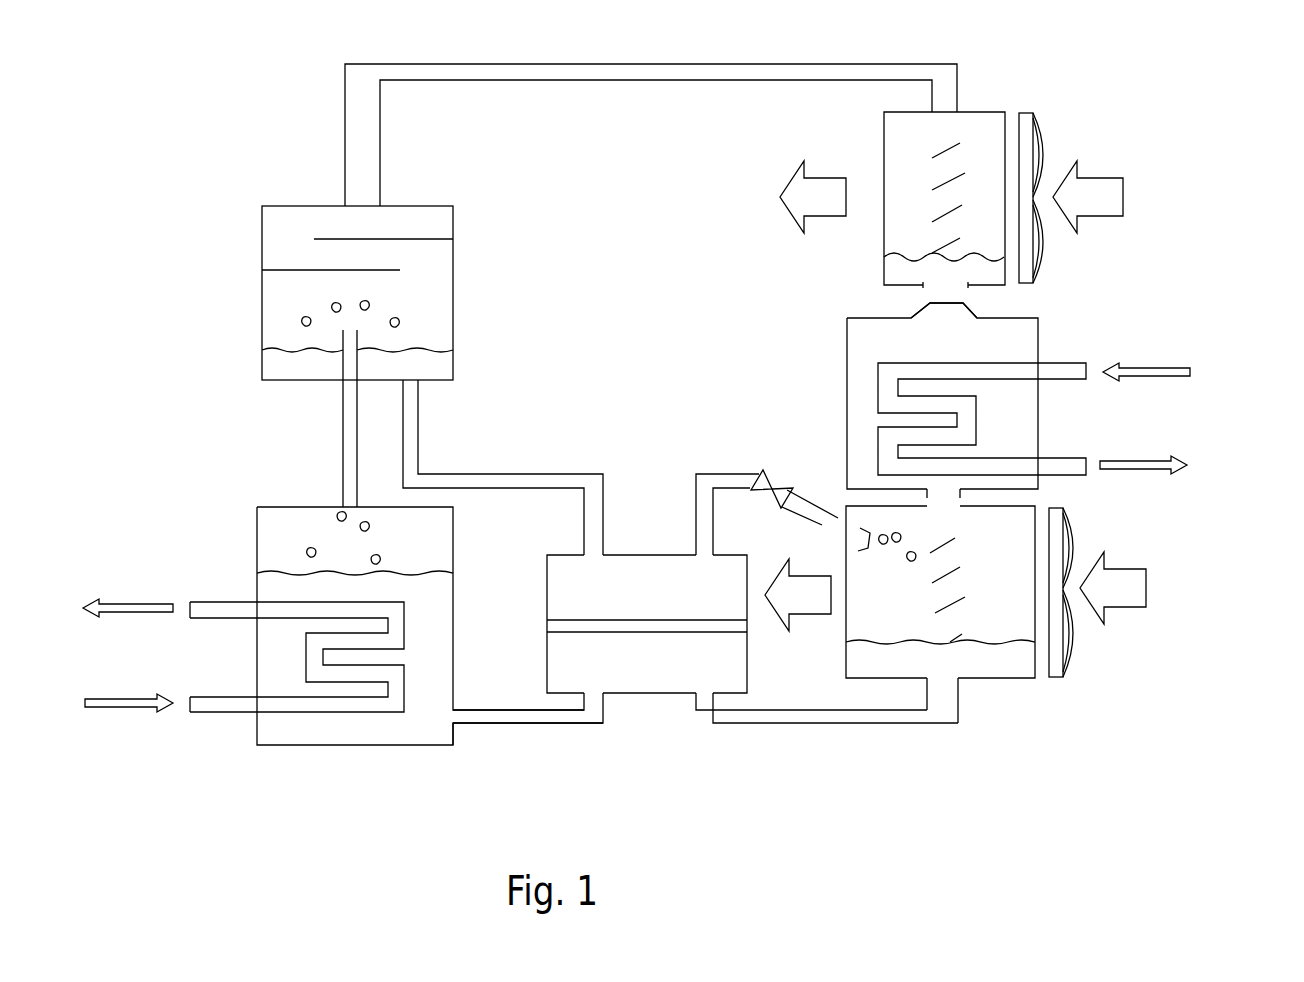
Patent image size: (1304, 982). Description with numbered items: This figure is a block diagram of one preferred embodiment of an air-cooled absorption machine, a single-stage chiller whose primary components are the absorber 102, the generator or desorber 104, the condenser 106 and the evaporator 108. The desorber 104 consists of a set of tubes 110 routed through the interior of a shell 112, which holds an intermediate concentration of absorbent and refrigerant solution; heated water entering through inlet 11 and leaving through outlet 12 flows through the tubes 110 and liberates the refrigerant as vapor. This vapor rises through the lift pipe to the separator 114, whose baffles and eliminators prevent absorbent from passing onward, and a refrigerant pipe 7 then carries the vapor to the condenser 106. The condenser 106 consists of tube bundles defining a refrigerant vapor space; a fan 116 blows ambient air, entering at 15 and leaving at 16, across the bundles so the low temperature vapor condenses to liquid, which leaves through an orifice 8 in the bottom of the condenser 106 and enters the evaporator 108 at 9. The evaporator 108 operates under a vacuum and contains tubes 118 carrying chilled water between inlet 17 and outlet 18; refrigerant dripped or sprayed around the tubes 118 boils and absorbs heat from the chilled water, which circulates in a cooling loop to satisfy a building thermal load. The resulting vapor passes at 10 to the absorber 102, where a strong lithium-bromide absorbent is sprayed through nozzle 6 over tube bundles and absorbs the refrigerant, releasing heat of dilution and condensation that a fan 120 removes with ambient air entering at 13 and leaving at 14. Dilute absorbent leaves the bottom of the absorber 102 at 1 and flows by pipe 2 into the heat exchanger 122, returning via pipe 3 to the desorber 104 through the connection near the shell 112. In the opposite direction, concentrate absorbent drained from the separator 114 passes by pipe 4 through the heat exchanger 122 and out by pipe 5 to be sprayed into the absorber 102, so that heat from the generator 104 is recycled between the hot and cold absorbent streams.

The absorber solution outlet line 1 is at (956, 701).
The heat exchanger inlet line from absorber 2 is at (821, 727).
The heat exchanger outlet line to generator 3 is at (532, 736).
The separator outlet line to heat exchanger 4 is at (503, 467).
The heat exchanger outlet line to absorber 5 is at (709, 514).
The spray valve nozzle 6 is at (833, 515).
The refrigerant vapor line 7 is at (651, 118).
The condenser outlet 8 is at (945, 281).
The evaporator inlet 9 is at (944, 325).
The evaporator outlet to absorber 10 is at (943, 507).
The heated water inlet 11 is at (157, 727).
The heated water outlet 12 is at (156, 594).
The absorber cooling air inlet 13 is at (1113, 586).
The absorber cooling air outlet 14 is at (798, 591).
The condenser cooling air inlet 15 is at (1111, 197).
The condenser cooling air outlet 16 is at (794, 197).
The chilled water inlet 17 is at (1141, 360).
The chilled water outlet 18 is at (1135, 480).
The absorber 102 is at (1030, 678).
The generator or desorber 104 is at (263, 517).
The condenser 106 is at (975, 113).
The evaporator 108 is at (1038, 320).
The tubes 110 is at (197, 715).
The shell 112 is at (453, 738).
The separator 114 is at (262, 212).
The fan 116 is at (1050, 140).
The tubes 118 is at (1063, 363).
The fan 120 is at (1075, 530).
The heat exchanger 122 is at (628, 540).